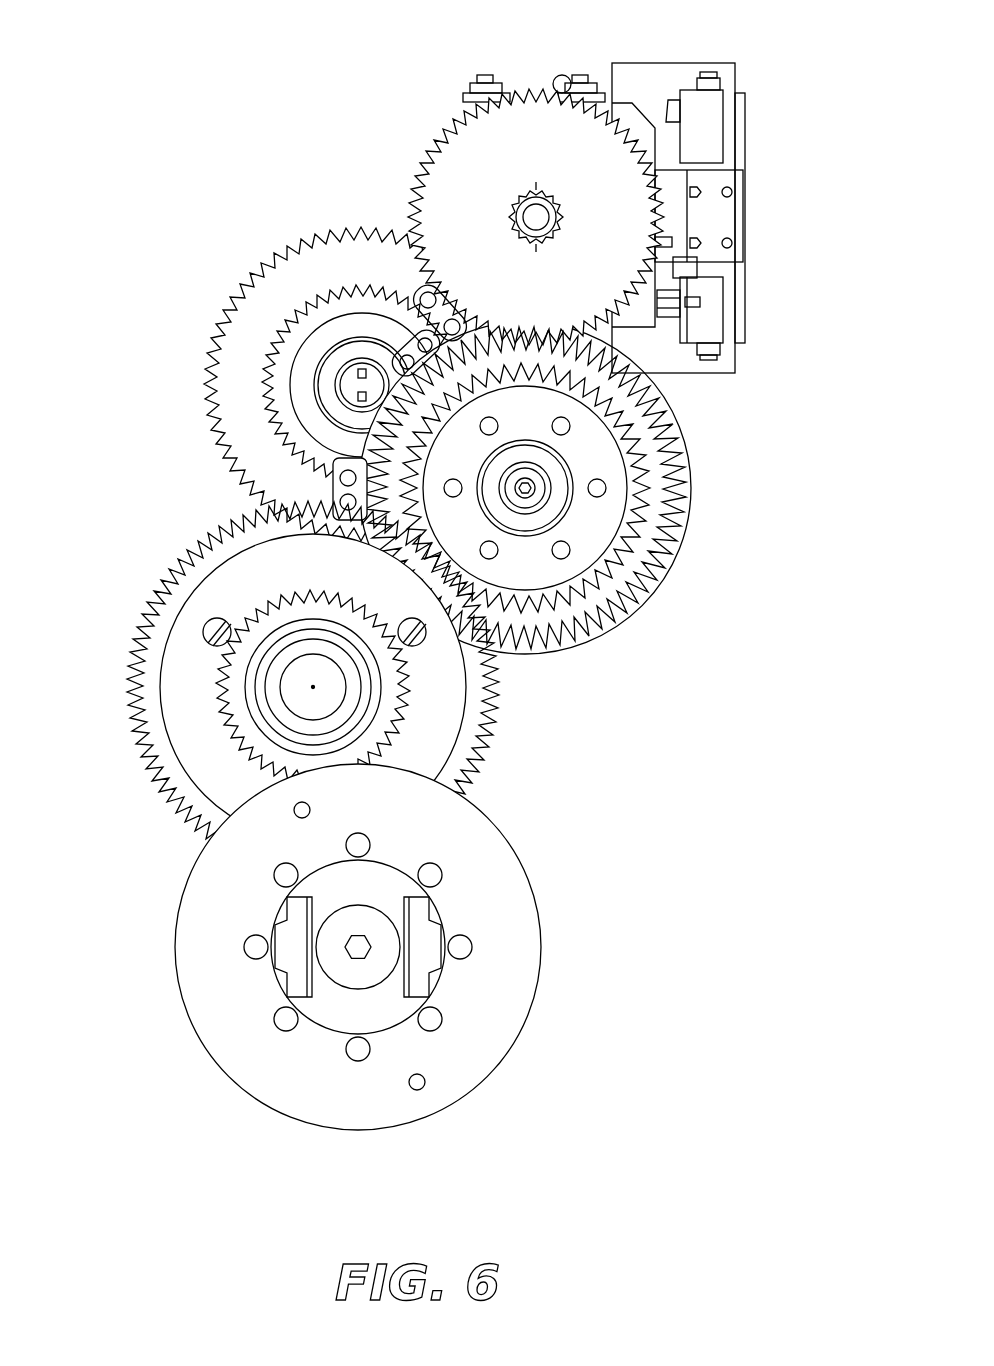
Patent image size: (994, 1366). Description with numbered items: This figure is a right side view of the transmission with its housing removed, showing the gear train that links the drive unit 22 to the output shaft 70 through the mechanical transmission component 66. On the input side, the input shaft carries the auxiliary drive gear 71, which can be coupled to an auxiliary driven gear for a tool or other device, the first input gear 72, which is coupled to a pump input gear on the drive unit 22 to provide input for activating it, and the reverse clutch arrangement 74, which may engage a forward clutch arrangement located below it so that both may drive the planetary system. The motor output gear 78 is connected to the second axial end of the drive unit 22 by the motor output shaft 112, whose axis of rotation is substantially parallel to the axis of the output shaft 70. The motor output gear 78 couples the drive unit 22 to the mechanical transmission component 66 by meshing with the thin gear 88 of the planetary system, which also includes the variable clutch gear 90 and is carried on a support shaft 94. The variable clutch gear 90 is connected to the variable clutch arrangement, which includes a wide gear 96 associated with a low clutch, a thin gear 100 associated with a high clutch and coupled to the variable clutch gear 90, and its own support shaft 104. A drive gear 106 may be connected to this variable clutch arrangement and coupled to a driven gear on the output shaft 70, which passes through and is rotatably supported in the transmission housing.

The drive unit 22 is at (783, 238).
The mechanical transmission component 66 is at (391, 434).
The output shaft 70 is at (362, 945).
The auxiliary drive gear 71 is at (207, 358).
The first input gear 72 is at (230, 298).
The reverse clutch arrangement 74 is at (234, 389).
The motor output gear 78 is at (432, 165).
The thin gear 88 is at (662, 430).
The variable clutch gear 90 is at (578, 600).
The support shaft 94 is at (533, 487).
The wide gear 96 is at (138, 650).
The thin gear 100 is at (148, 727).
The support shaft 104 is at (332, 692).
The drive gear 106 is at (257, 740).
The motor output shaft 112 is at (534, 216).